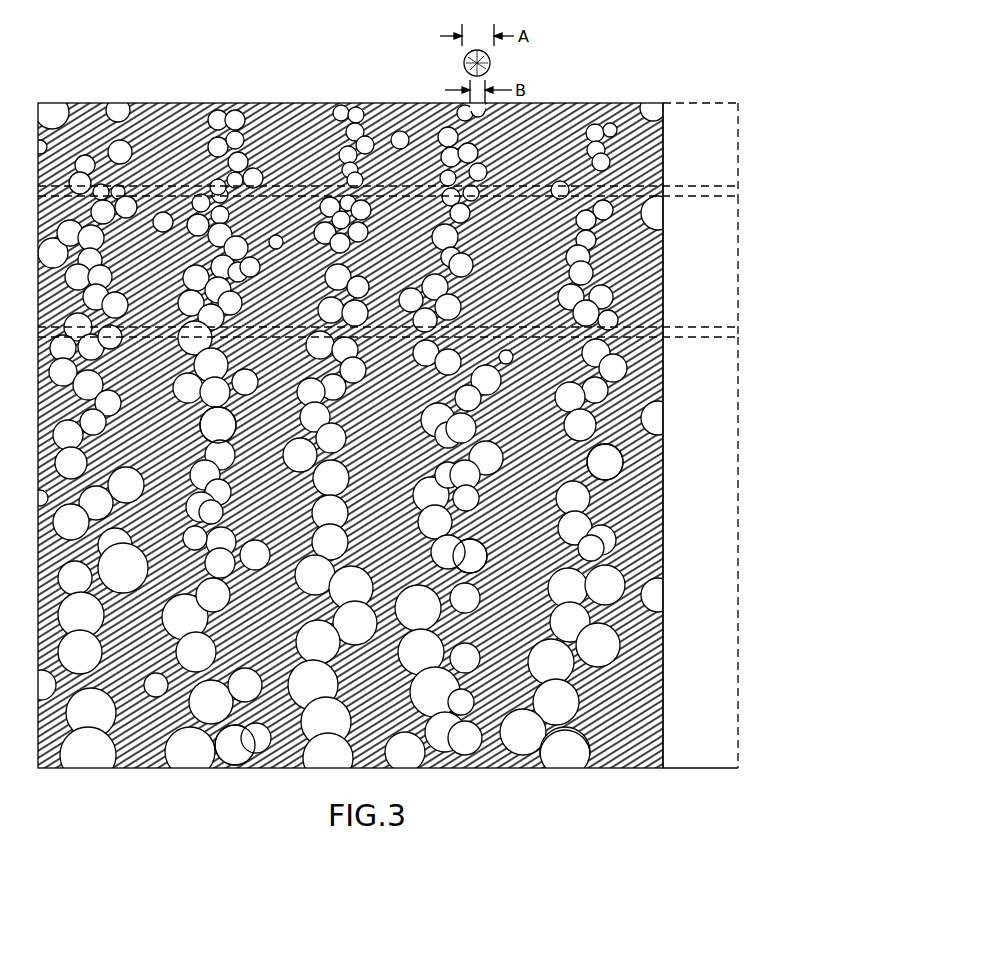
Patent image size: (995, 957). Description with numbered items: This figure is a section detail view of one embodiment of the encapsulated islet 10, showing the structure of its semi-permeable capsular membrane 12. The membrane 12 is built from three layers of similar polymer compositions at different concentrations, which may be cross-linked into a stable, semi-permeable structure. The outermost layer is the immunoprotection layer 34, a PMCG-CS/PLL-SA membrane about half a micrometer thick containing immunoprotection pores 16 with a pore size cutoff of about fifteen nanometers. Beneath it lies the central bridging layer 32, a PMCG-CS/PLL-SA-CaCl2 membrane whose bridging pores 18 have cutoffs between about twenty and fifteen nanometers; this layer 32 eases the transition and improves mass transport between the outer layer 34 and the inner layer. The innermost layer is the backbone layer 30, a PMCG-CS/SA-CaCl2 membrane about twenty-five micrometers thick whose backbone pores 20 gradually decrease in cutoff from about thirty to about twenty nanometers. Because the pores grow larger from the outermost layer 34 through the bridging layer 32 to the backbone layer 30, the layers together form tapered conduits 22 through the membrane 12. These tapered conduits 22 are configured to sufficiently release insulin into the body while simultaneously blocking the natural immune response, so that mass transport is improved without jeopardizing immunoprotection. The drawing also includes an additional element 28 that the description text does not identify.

The encapsulated islet 10 is at (716, 62).
The semi-permeable capsular membrane 12 is at (665, 280).
The immunoprotection pores 16 is at (534, 102).
The bridging pores 18 is at (613, 470).
The backbone pores 20 is at (567, 770).
The tapered conduits 22 is at (230, 427).
The particle 28 is at (464, 74).
The backbone layer 30 is at (742, 520).
The bridging layer 32 is at (742, 250).
The immunoprotection layer 34 is at (742, 128).